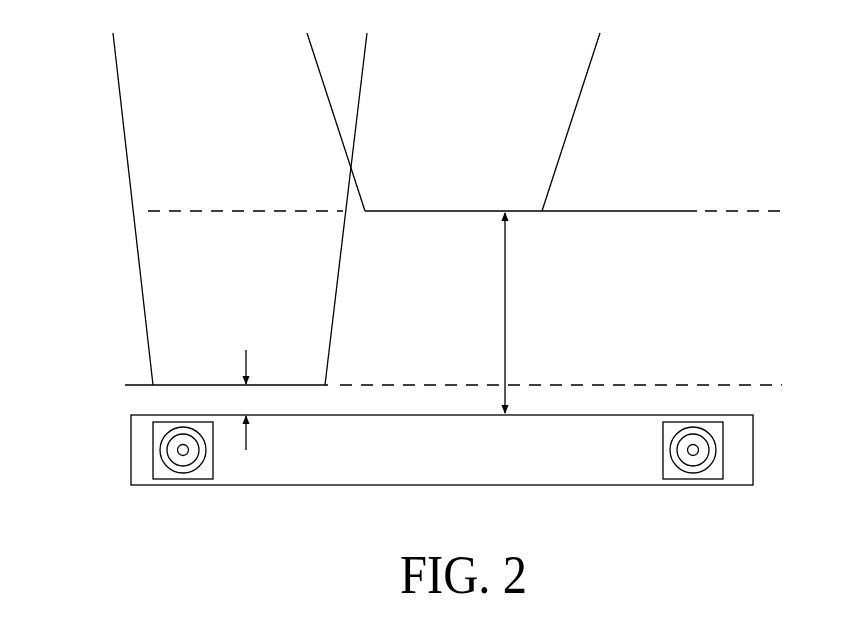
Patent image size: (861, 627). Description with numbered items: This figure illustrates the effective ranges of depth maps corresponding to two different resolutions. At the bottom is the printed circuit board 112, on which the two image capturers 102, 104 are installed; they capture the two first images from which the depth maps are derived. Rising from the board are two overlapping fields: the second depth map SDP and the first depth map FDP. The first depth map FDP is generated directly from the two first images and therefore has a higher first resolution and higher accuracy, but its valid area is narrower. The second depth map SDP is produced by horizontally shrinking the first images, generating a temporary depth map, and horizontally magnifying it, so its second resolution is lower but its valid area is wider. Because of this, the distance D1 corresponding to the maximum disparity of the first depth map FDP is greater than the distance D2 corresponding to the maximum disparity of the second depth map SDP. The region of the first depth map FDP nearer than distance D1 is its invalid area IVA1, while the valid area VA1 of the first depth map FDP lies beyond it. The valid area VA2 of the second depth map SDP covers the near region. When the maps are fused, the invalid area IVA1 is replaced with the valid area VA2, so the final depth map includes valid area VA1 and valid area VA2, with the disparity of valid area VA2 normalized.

The image capturer 102 is at (717, 479).
The image capturer 104 is at (158, 479).
The printed circuit board 112 is at (753, 452).
The second depth map SDP is at (115, 68).
The first depth map FDP is at (592, 63).
The valid area of the first depth map VA1 is at (463, 122).
The valid area of the second depth map VA2 is at (240, 295).
The invalid area of the first depth map IVA1 is at (401, 295).
The distance corresponding to maximum disparity of the first depth map D1 is at (522, 313).
The distance corresponding to maximum disparity of the second depth map D2 is at (264, 400).